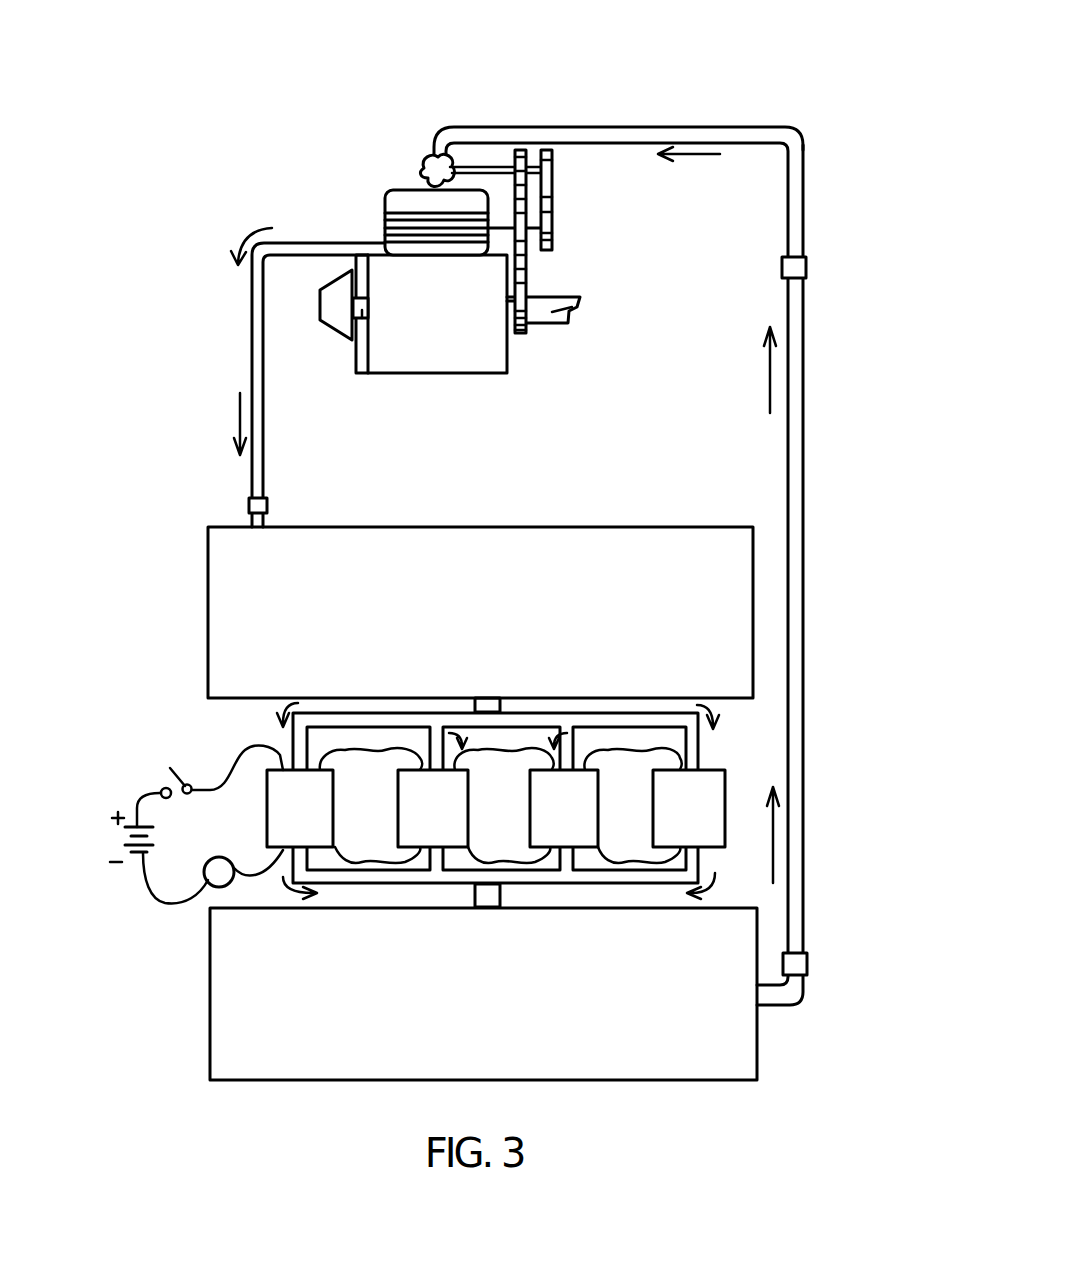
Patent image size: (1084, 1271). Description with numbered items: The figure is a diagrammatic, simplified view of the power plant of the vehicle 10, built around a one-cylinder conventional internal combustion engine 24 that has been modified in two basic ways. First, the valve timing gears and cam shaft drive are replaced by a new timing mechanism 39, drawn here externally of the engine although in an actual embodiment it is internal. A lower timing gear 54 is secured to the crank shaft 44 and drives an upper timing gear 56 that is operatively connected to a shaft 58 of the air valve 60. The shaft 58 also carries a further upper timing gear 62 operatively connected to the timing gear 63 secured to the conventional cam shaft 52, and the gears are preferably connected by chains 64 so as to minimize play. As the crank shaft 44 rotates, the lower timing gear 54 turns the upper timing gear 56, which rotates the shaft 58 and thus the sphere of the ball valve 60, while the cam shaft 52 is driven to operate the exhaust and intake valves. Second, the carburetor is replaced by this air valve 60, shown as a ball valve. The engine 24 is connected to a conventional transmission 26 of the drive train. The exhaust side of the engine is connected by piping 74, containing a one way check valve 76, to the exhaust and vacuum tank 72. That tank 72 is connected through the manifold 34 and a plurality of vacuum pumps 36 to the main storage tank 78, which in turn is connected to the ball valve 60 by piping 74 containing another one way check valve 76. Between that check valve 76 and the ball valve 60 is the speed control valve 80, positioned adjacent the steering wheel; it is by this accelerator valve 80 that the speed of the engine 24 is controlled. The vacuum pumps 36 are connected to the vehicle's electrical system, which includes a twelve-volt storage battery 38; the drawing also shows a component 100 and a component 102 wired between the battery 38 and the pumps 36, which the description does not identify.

The vehicle 10 is at (828, 88).
The internal combustion engine 24 is at (420, 350).
The transmission 26 is at (335, 318).
The manifold 34 is at (638, 722).
The vacuum pumps 36 is at (288, 838).
The storage battery 38 is at (135, 820).
The timing mechanism 39 is at (527, 230).
The crank shaft 44 is at (580, 297).
The cam shaft 52 is at (552, 205).
The lower timing gear 54 is at (523, 334).
The upper timing gear 56 is at (524, 150).
The shaft 58 is at (496, 167).
The air valve 60 is at (426, 164).
The upper timing gear 62 is at (552, 192).
The timing gear 63 is at (527, 322).
The chains 64 is at (553, 197).
The exhaust and vacuum tank 72 is at (527, 578).
The piping 74 is at (805, 430).
The one way check valve 76 is at (250, 503).
The main storage tank 78 is at (474, 1017).
The speed control valve 80 is at (806, 266).
The sensor 100 is at (217, 878).
The switch 102 is at (163, 788).